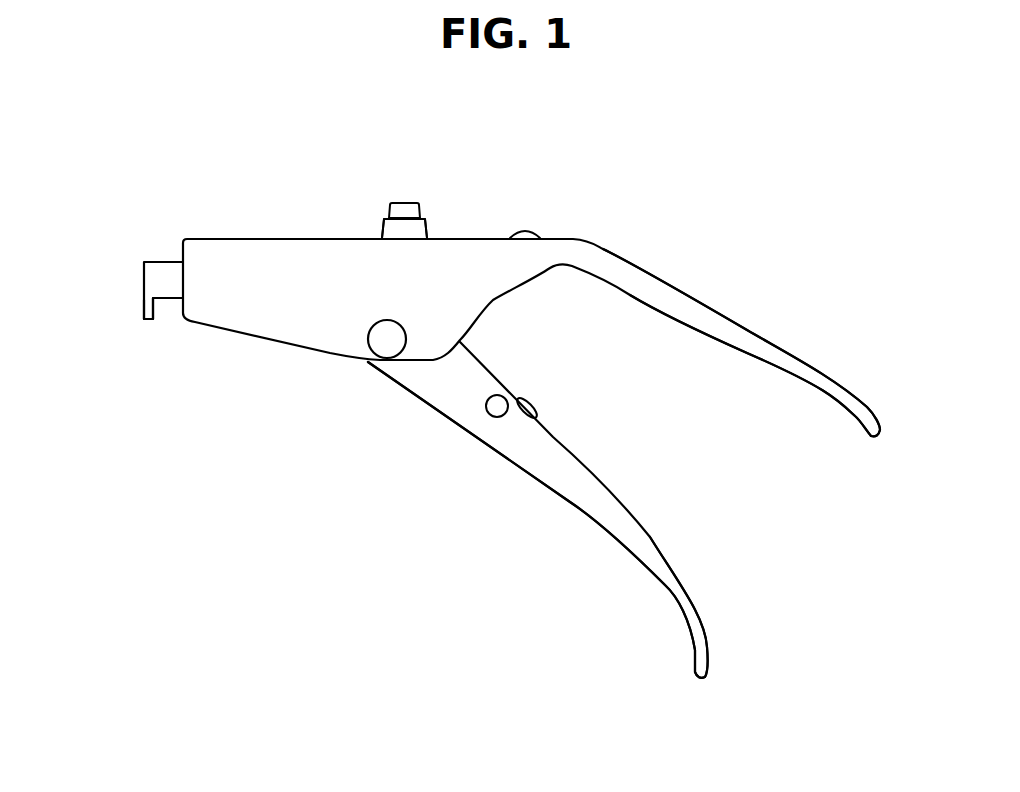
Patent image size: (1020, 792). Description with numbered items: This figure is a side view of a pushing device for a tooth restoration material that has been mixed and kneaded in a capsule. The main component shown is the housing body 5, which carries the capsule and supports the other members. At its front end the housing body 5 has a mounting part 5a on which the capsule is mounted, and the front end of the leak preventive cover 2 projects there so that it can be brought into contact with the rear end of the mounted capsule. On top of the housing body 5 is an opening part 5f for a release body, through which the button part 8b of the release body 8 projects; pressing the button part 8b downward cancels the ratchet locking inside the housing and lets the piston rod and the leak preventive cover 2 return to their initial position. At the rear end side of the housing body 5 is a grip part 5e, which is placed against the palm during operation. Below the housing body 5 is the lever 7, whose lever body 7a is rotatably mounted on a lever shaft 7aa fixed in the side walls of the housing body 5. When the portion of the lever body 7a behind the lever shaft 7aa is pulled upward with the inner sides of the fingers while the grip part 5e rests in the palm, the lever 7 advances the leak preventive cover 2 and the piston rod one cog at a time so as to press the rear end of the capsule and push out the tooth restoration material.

The leak preventive cover 2 is at (180, 258).
The housing body 5 is at (283, 246).
The mounting part 5a is at (147, 312).
The grip part 5e is at (685, 303).
The opening part for a release body 5f is at (422, 218).
The lever 7 is at (443, 440).
The lever body 7a is at (557, 482).
The lever shaft 7aa is at (389, 341).
The release body 8 is at (402, 207).
The button part 8b is at (404, 228).